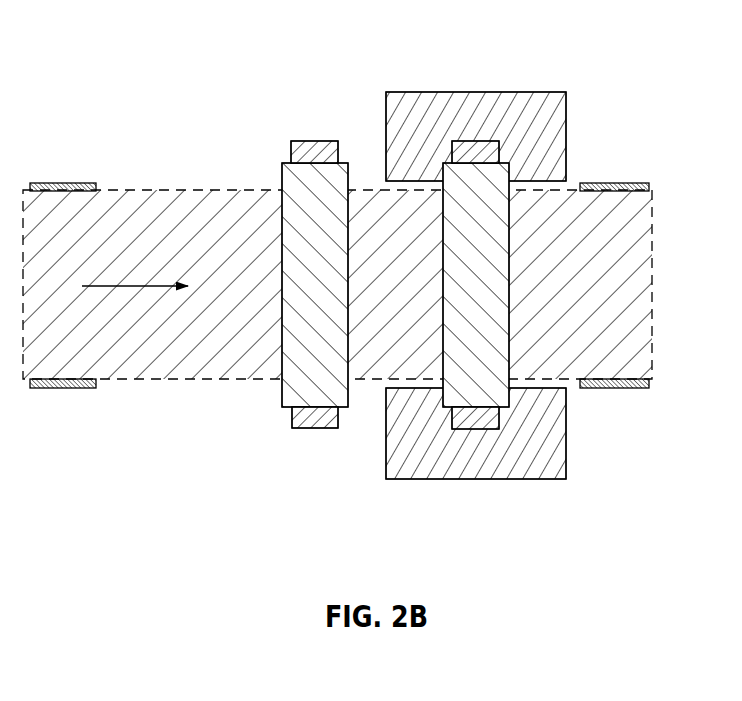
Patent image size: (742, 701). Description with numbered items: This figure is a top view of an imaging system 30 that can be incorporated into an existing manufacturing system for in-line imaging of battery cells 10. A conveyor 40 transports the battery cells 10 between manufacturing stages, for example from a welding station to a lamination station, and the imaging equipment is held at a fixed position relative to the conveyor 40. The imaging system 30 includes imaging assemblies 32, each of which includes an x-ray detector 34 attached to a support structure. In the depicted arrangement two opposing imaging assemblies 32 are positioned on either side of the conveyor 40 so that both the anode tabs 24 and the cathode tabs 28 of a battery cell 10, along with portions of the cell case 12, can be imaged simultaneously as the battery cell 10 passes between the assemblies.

The battery cell 10 is at (512, 298).
The cell case 12 is at (297, 184).
The anode tab 24 is at (318, 152).
The cathode tab 28 is at (312, 420).
The imaging system 30 is at (658, 86).
The imaging assembly 32 is at (476, 92).
The x-ray detector 34 is at (550, 147).
The conveyor 40 is at (161, 207).